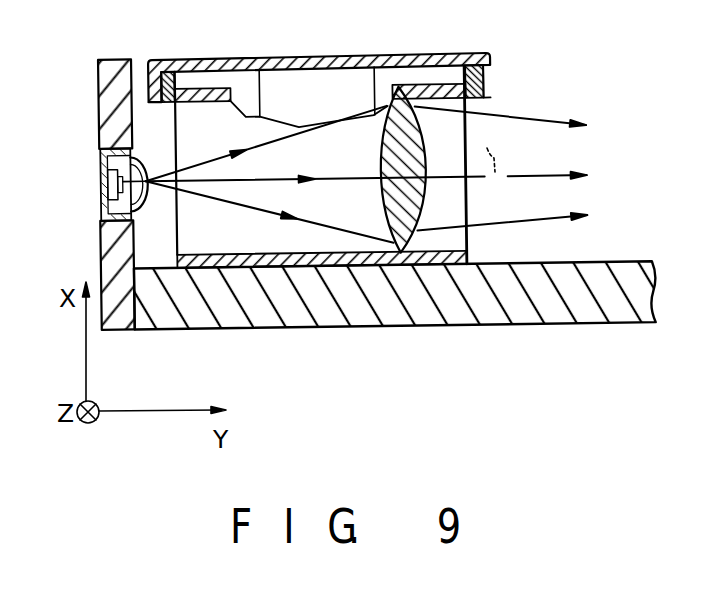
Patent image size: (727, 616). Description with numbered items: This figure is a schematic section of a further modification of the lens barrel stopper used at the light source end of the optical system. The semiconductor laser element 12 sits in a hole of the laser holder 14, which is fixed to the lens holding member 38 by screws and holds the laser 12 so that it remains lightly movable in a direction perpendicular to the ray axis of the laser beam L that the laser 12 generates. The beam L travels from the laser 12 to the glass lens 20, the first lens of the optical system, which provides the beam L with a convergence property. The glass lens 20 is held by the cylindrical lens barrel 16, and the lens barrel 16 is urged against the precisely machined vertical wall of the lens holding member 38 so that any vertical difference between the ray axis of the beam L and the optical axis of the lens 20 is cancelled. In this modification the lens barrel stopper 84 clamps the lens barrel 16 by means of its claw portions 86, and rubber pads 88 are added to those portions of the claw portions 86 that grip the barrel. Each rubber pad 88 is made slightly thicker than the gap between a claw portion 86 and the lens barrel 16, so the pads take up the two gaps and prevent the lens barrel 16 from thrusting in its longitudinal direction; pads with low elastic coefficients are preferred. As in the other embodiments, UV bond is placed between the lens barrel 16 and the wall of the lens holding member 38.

The semiconductor laser element 12 is at (101, 200).
The laser holder 14 is at (100, 262).
The lens barrel 16 is at (469, 204).
The glass lens 20 is at (381, 242).
The lens holding member 38 is at (445, 316).
The lens barrel stopper 84 is at (415, 22).
The claw portions 86 is at (146, 66).
The rubber pads 88 is at (165, 104).
The laser beam L is at (485, 148).